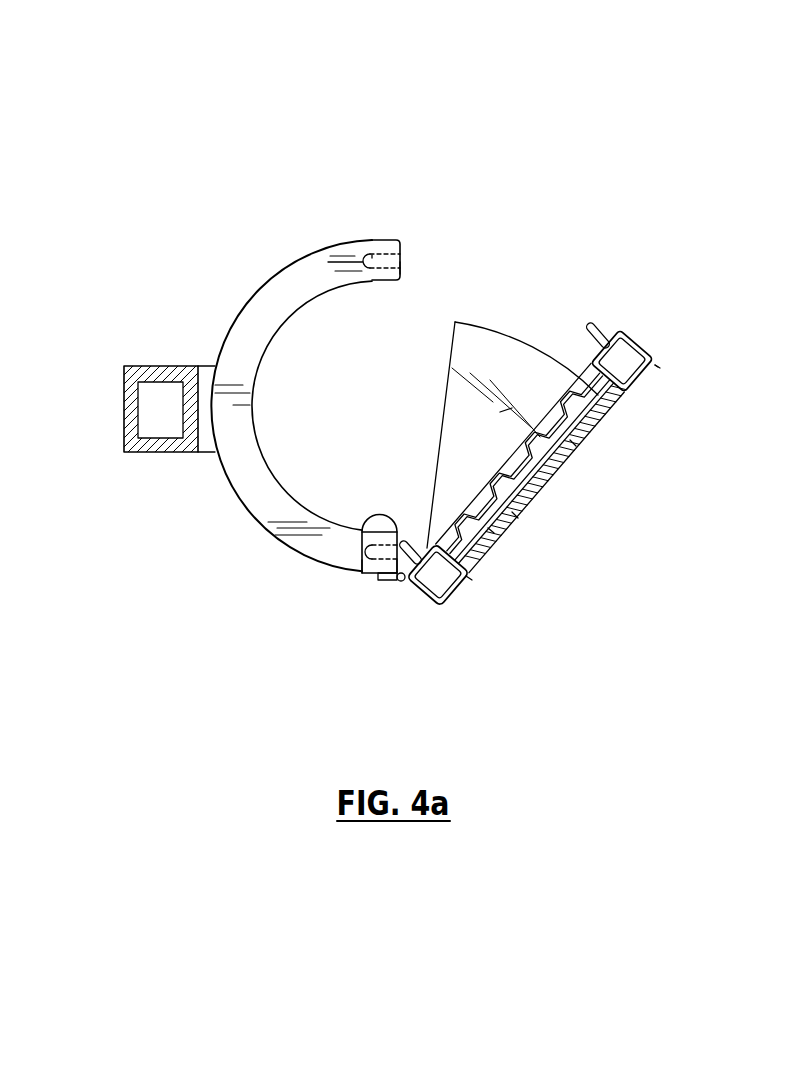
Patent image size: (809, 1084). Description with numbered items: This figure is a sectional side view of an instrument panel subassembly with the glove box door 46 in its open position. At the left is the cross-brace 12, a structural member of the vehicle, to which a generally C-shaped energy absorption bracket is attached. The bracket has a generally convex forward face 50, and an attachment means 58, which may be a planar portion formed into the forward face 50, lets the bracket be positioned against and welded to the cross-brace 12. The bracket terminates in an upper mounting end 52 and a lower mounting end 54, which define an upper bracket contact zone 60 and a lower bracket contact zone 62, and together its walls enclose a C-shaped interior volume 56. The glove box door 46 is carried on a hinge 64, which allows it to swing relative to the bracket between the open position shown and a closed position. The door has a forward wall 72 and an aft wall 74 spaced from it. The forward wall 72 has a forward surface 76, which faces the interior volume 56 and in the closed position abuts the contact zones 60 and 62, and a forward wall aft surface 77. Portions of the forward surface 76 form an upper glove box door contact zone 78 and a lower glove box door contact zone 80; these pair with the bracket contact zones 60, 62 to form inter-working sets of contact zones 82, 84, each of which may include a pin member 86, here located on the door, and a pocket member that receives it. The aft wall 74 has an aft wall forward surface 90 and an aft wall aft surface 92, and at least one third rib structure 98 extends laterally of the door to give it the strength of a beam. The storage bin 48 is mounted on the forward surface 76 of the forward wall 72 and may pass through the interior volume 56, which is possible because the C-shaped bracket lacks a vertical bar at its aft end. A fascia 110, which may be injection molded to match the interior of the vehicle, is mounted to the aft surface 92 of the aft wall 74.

The cross-brace 12 is at (153, 364).
The glove box door 46 is at (640, 334).
The storage bin 48 is at (483, 317).
The convex forward face 50 is at (227, 482).
The upper mounting end 52 is at (390, 240).
The lower mounting end 54 is at (368, 580).
The C-shaped interior volume 56 is at (307, 408).
The attachment means 58 is at (210, 364).
The upper bracket contact zone 60 is at (400, 274).
The lower bracket contact zone 62 is at (363, 580).
The hinge 64 is at (398, 580).
The forward wall 72 is at (493, 408).
The aft wall 74 is at (610, 407).
The forward surface 76 is at (585, 396).
The forward wall aft surface 77 is at (507, 410).
The upper glove box door contact zone 78 is at (608, 318).
The lower glove box door contact zone 80 is at (420, 543).
The inter-working set of contact zones 82 is at (660, 368).
The inter-working set of contact zones 84 is at (372, 258).
The pin member 86 is at (656, 366).
The aft wall forward surface 90 is at (515, 515).
The aft wall aft surface 92 is at (573, 442).
The third rib structure 98 is at (490, 530).
The fascia 110 is at (453, 598).